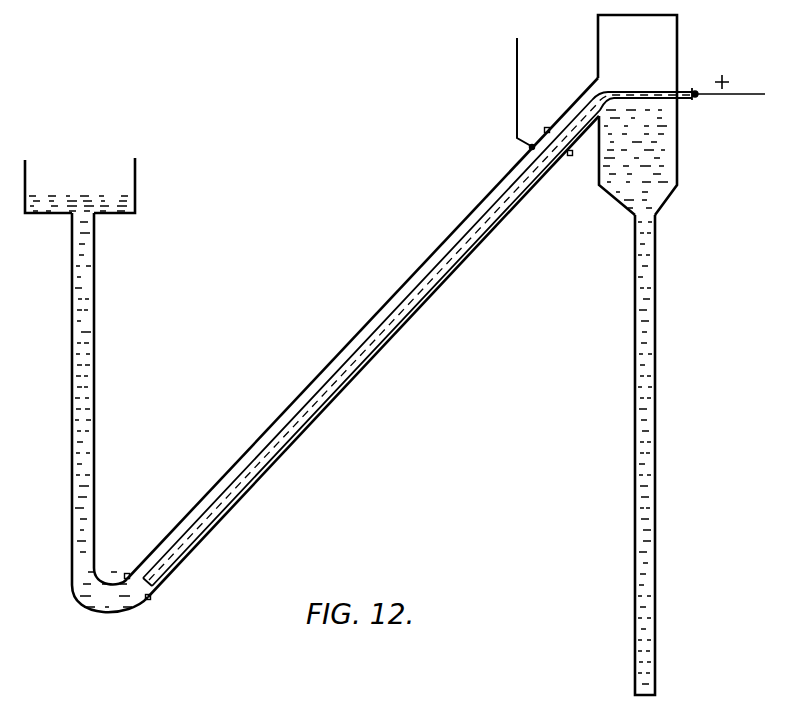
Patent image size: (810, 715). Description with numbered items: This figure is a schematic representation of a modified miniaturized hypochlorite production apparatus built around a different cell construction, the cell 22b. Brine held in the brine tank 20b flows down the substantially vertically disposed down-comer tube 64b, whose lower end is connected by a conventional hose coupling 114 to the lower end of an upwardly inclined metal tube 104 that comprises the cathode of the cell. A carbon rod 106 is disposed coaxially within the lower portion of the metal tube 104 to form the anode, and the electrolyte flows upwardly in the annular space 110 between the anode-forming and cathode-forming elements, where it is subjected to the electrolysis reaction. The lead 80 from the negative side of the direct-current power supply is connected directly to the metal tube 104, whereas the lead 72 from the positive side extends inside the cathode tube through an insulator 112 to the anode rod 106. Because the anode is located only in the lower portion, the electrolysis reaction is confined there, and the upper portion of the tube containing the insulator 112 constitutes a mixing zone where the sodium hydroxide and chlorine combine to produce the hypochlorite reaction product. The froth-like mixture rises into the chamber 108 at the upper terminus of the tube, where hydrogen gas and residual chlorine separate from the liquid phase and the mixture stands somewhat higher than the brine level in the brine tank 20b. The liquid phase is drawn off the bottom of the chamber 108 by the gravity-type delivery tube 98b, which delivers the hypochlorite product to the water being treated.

The brine tank 20b is at (135, 188).
The down-comer tube 64b is at (94, 360).
The cell 22b is at (363, 337).
The annular space 110 is at (254, 446).
The metal tube 104 is at (288, 448).
The insulator 112 is at (470, 243).
The carbon rod 106 is at (323, 398).
The hose coupling 114 is at (163, 601).
The lead 80 is at (510, 97).
The chamber 108 is at (667, 52).
The delivery tube 98b is at (657, 443).
The lead 72 is at (741, 95).